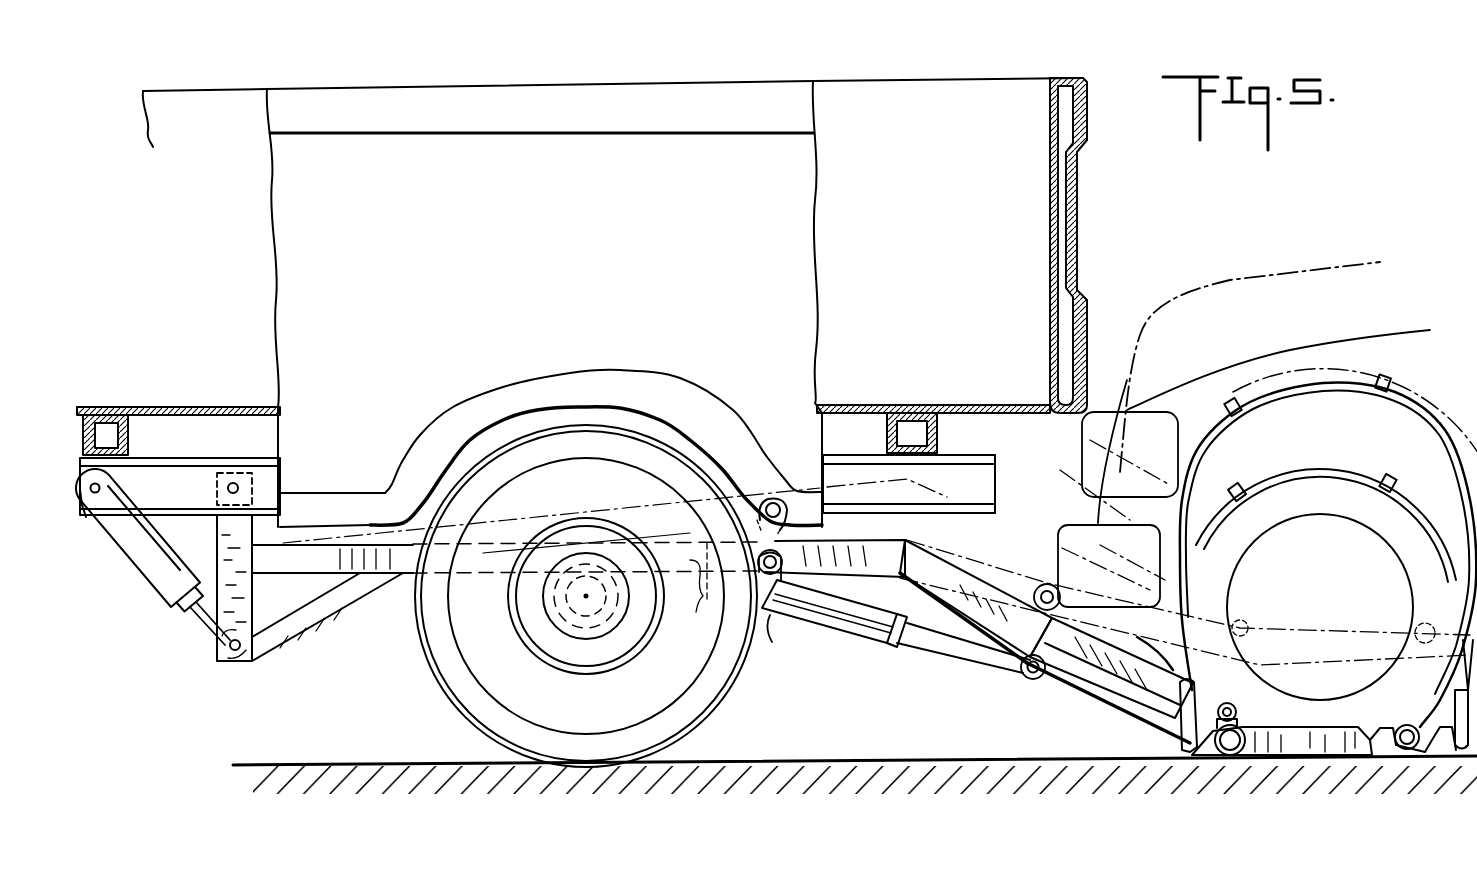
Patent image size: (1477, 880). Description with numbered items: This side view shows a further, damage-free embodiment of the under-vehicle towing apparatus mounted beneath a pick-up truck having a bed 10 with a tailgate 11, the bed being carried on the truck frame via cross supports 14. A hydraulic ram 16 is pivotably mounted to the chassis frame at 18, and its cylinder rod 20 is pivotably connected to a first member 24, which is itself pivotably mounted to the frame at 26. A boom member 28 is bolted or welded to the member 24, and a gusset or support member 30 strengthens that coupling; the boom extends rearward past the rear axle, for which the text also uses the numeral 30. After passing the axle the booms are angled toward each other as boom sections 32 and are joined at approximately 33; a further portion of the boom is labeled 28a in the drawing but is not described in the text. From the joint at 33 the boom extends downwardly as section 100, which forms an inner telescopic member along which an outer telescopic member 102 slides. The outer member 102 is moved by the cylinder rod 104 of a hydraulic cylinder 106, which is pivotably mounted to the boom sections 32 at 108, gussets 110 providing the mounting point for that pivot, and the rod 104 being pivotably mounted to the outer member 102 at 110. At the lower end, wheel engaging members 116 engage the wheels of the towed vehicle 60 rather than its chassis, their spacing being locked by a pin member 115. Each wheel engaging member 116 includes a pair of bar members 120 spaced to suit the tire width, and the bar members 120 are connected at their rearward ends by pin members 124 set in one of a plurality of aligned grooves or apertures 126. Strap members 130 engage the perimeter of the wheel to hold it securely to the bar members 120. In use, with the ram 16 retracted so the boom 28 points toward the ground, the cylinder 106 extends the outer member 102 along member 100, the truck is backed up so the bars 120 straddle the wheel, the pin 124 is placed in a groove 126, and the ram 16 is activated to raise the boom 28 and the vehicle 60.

The bed 10 is at (752, 89).
The tailgate 11 is at (1073, 215).
The cross supports 14 is at (123, 406).
The hydraulic ram 16 is at (157, 571).
The pivot mounting on chassis frame 18 is at (120, 478).
The cylinder rod 20 is at (207, 623).
The first member 24 is at (243, 589).
The pivot mounting of first member 26 is at (233, 483).
The boom member 28 is at (371, 567).
The beam section 28a is at (694, 596).
The gusset or support member 30 is at (293, 623).
The boom sections 32 is at (793, 607).
The boom joint 33 is at (912, 517).
The vehicle 60 is at (1213, 300).
The downwardly extending section 100 is at (980, 613).
The outer telescopic member 102 is at (1075, 680).
The cylinder rod 104 is at (920, 640).
The hydraulic cylinder 106 is at (866, 645).
The pivot point 108 is at (770, 617).
The gussets 110 is at (1033, 679).
The pin member 115 is at (1177, 730).
The wheel engaging members 116 is at (1384, 798).
The bar members 120 is at (1280, 757).
The pin members 124 is at (1410, 760).
The grooves or apertures 126 is at (1367, 755).
The strap members 130 is at (1413, 507).